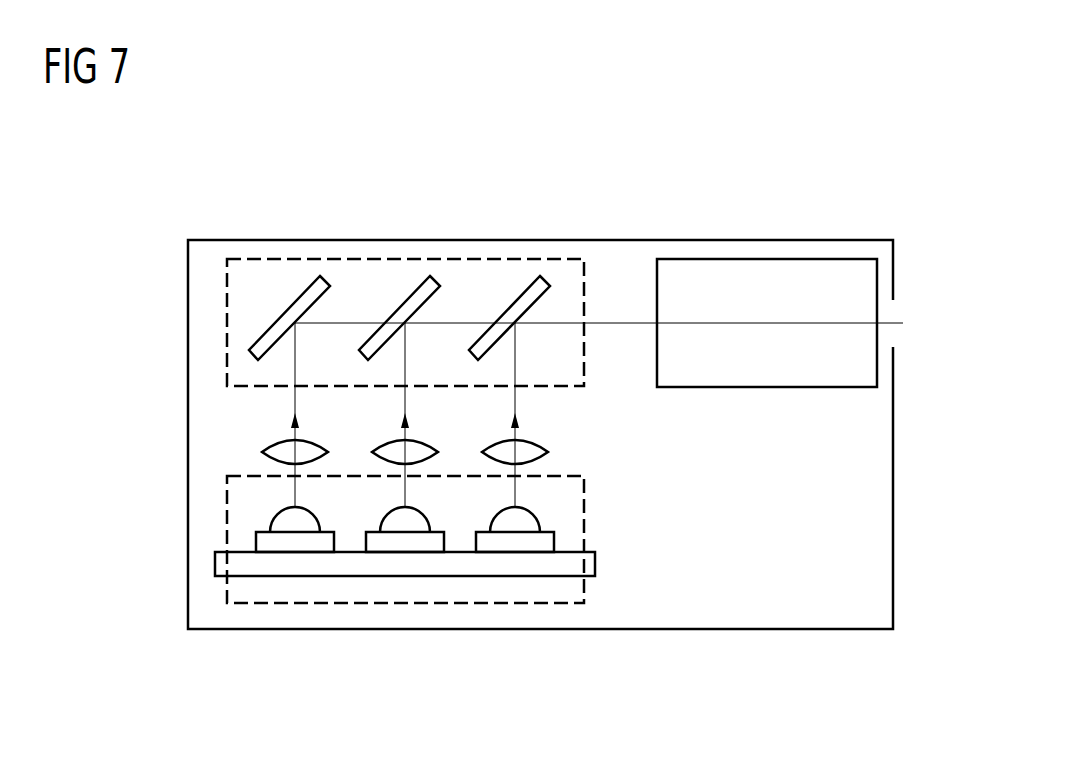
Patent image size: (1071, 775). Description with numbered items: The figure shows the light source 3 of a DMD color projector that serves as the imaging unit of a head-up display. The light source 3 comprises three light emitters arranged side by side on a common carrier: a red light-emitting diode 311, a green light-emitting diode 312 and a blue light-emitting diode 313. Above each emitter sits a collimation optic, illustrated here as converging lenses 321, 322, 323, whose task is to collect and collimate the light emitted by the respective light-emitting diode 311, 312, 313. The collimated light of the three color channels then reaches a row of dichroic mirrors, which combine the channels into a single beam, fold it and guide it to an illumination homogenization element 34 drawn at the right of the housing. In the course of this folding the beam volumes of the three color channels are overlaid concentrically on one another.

The light source 3 is at (251, 181).
The illumination homogenization element 34 is at (777, 282).
The red light-emitting diode 311 is at (295, 542).
The green light-emitting diode 312 is at (405, 542).
The blue light-emitting diode 313 is at (515, 542).
The converging lens 321 is at (283, 450).
The converging lens 322 is at (393, 445).
The converging lens 323 is at (528, 450).